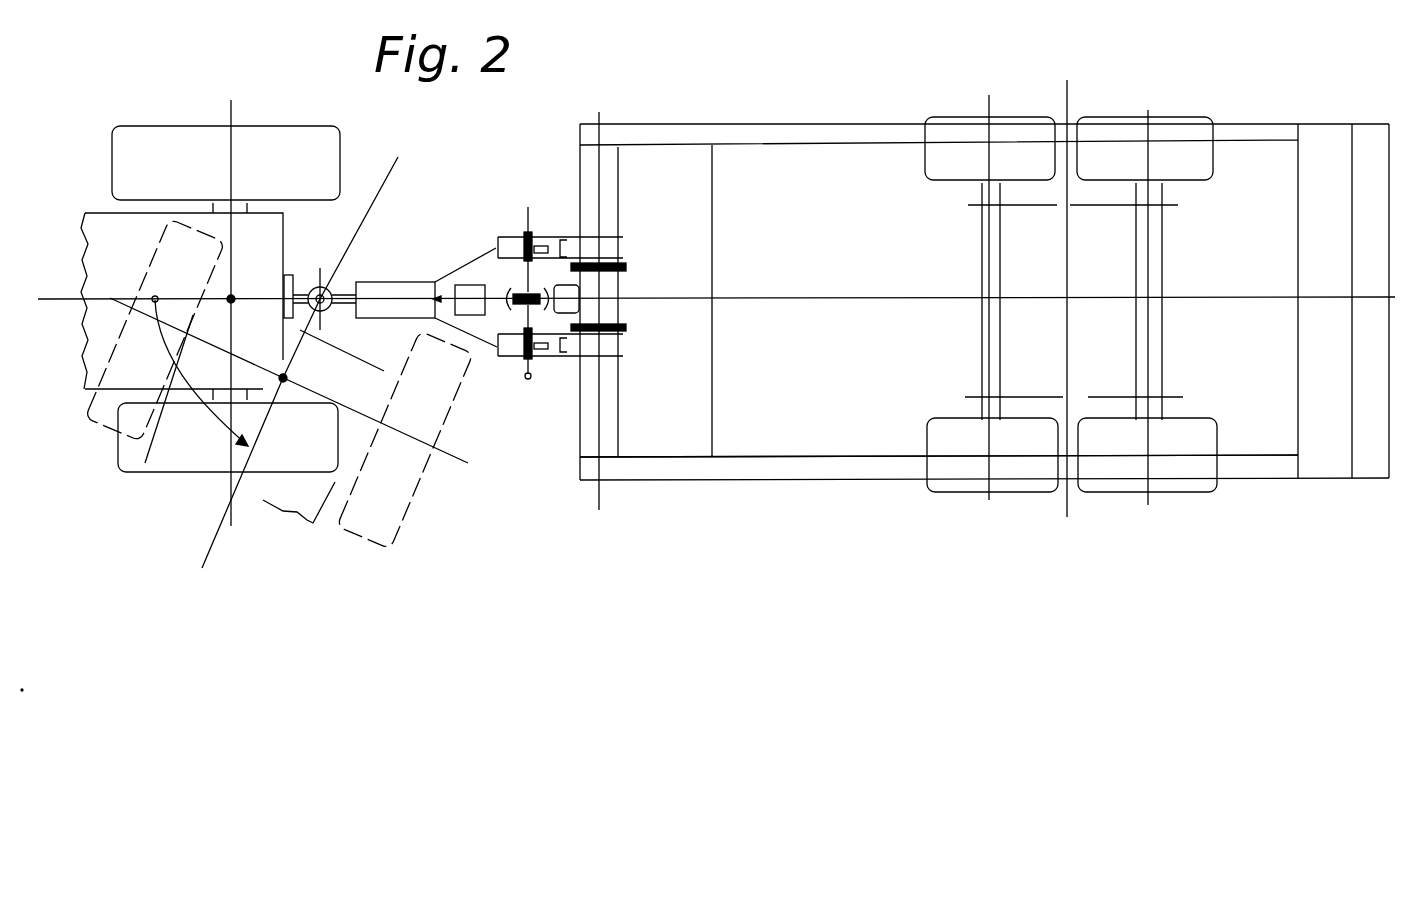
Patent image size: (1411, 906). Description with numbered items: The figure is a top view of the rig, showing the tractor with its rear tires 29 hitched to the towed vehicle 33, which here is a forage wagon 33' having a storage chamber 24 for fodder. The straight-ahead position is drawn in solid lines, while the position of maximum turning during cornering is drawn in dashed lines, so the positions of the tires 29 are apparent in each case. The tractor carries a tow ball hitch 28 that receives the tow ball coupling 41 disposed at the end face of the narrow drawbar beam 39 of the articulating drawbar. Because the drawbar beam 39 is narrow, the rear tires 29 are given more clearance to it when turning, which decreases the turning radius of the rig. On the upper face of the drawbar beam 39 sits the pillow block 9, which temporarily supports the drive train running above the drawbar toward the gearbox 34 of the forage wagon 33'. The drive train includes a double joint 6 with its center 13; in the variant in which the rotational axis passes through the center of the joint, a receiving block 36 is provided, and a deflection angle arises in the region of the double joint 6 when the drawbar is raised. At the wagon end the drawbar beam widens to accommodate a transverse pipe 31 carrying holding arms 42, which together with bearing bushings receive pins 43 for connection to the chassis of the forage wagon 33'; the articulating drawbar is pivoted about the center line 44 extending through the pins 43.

The rear tire 29 is at (285, 127).
The hitch 28 is at (303, 362).
The tow ball coupling 41 is at (289, 310).
The drawbar beam 39 is at (410, 282).
The pillow block 9 is at (468, 285).
The holding arms 42 is at (507, 248).
The receiving block 36 is at (567, 247).
The center line 44 is at (560, 457).
The pin 43 is at (551, 399).
The center 13 is at (511, 428).
The double joint 6 is at (528, 443).
The gearbox 34 is at (682, 187).
The transverse pipe 31 is at (650, 277).
The storage chamber 24 is at (795, 438).
The towed vehicle 33 is at (984, 536).
The forage wagon 33' is at (939, 525).